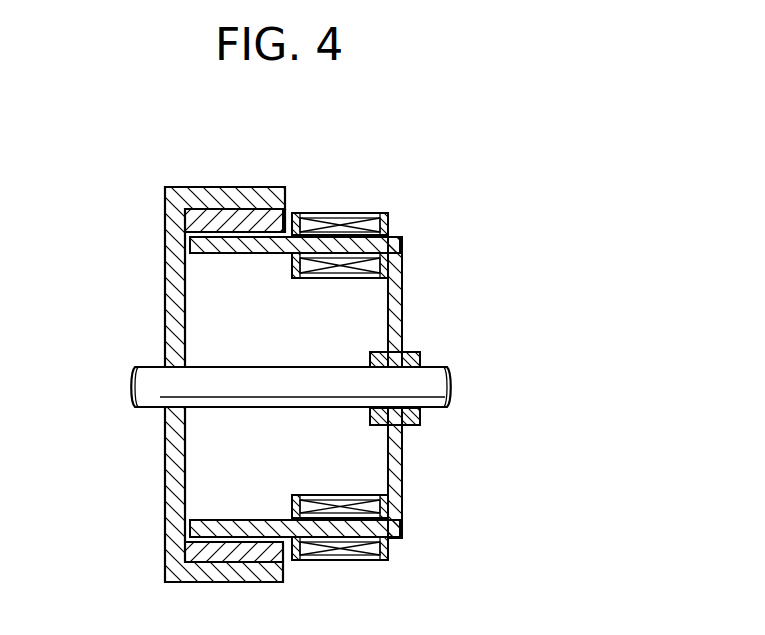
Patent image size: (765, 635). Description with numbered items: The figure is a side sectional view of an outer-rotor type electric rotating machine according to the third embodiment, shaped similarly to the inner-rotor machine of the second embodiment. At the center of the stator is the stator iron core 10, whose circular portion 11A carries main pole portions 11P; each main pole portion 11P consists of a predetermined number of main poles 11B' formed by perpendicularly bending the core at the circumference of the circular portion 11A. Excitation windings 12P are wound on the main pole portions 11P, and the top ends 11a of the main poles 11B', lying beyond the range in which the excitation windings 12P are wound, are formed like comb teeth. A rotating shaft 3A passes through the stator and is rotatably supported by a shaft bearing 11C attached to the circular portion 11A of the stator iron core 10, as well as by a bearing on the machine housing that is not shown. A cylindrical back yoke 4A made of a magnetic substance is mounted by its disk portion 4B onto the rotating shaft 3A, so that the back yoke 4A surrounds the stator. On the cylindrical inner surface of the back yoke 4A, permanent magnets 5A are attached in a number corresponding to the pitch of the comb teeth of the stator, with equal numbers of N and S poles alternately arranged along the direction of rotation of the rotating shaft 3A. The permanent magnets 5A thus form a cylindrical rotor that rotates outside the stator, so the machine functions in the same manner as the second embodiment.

The cylindrical back yoke 4A is at (230, 195).
The disk portion 4B is at (186, 236).
The permanent magnets 5A is at (266, 218).
The main poles 11B' is at (244, 387).
The top ends of the main poles 11a is at (222, 262).
The excitation windings 12P is at (346, 284).
The circular portion of the stator iron core 11A is at (403, 272).
The main pole portion 11P is at (400, 210).
The stator iron core 10 is at (408, 247).
The shaft bearing 11C is at (414, 357).
The rotating shaft 3A is at (136, 395).